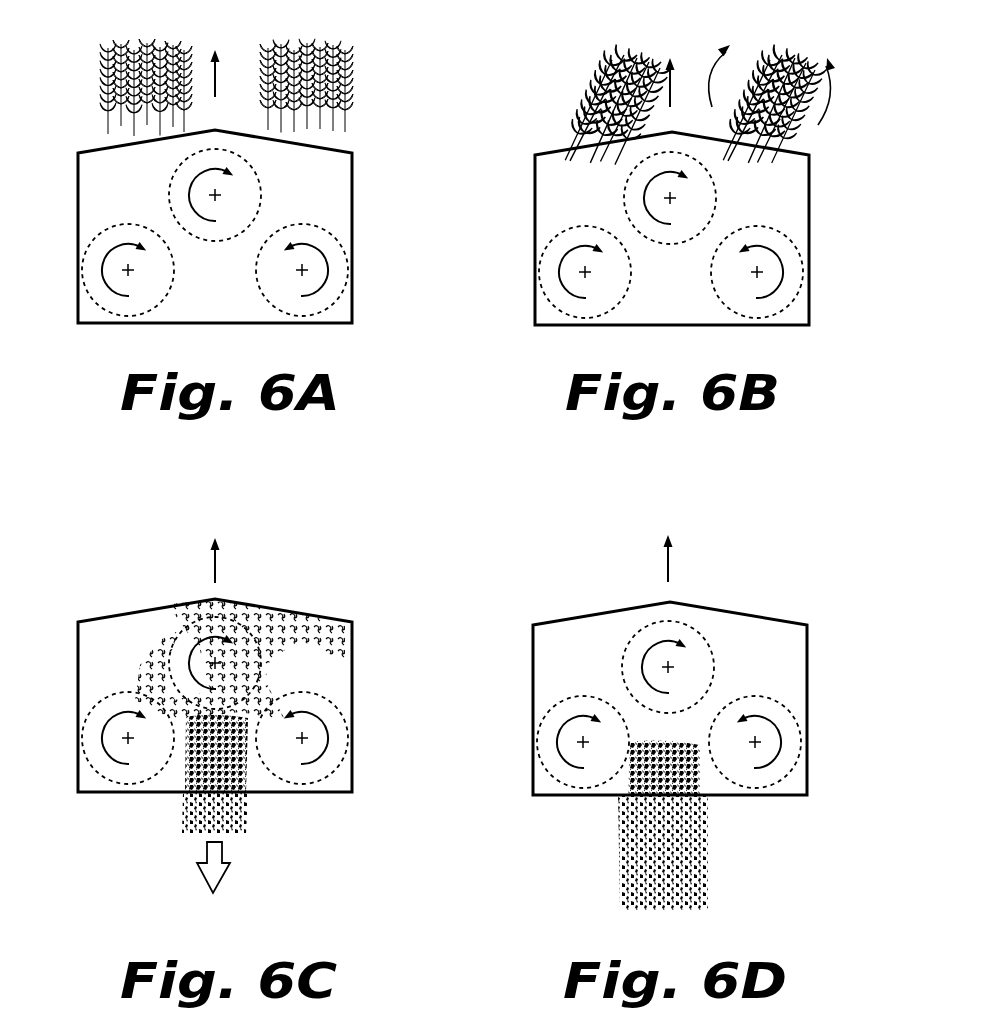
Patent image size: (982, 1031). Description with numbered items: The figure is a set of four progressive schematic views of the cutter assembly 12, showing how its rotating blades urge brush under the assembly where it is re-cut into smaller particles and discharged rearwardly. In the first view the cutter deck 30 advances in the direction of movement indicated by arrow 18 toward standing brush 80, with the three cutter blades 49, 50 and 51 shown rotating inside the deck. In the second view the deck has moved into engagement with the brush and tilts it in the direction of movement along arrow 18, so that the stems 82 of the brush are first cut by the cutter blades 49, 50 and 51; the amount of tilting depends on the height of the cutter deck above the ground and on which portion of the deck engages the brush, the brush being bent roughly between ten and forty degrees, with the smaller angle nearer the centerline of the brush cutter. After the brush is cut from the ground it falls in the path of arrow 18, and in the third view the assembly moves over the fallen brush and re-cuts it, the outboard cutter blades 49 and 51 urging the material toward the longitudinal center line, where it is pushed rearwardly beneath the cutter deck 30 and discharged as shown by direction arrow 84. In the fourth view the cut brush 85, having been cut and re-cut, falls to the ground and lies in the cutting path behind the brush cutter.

In FIG. 6A, the rotary separator apparatus 12 is at (255, 226).
In FIG. 6B, the rotary separator apparatus 12 is at (689, 228).
In FIG. 6C, the rotary separator apparatus 12 is at (233, 695).
In FIG. 6A, the arrow indicating direction of movement 18 is at (216, 75).
In FIG. 6B, the arrow indicating direction of movement 18 is at (672, 95).
In FIG. 6A, the cutter deck 30 is at (335, 178).
In FIG. 6C, the cutter deck 30 is at (347, 630).
In FIG. 6B, the cutter blade 49 is at (553, 292).
In FIG. 6C, the cutter blade 49 is at (86, 740).
In FIG. 6B, the cutter blade 50 is at (670, 245).
In FIG. 6B, the cutter blade 51 is at (797, 293).
In FIG. 6C, the cutter blade 51 is at (352, 742).
In FIG. 6A, the brush 80 is at (140, 97).
In FIG. 6B, the stems of the brush 82 is at (570, 180).
In FIG. 6C, the direction arrow 84 is at (217, 853).
In FIG. 6D, the cut brush 85 is at (700, 835).